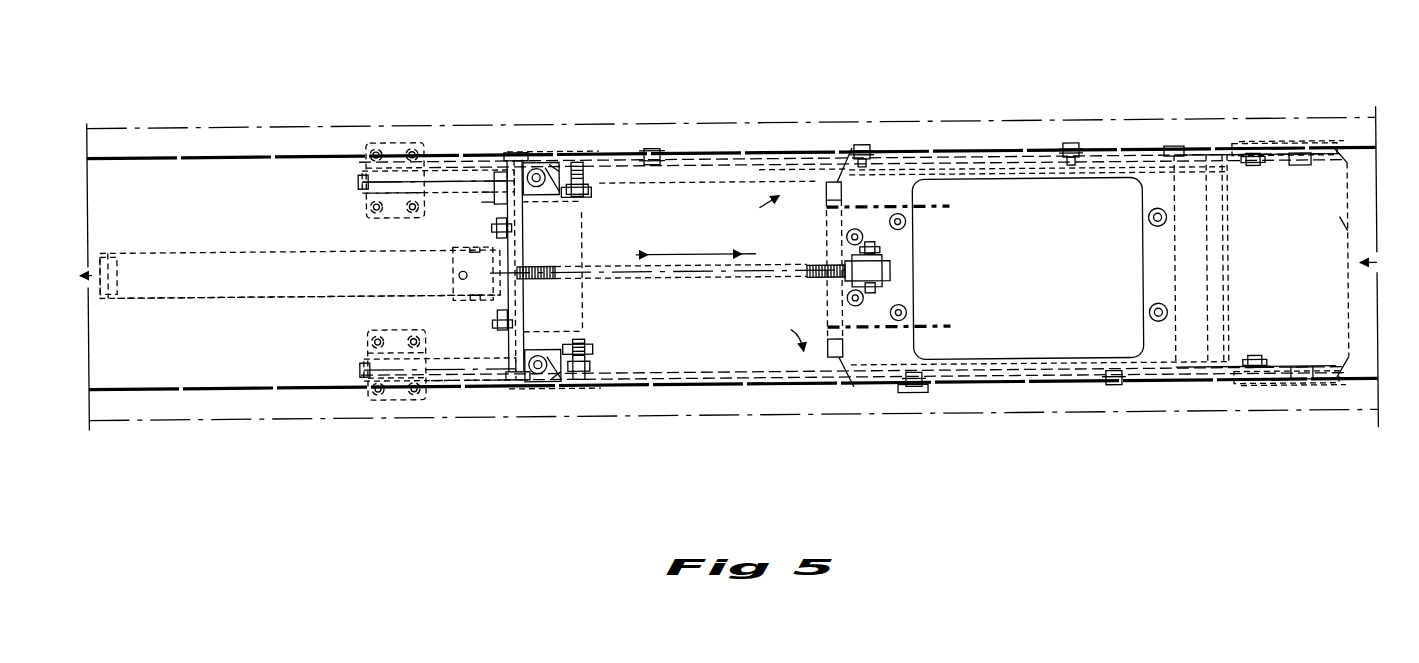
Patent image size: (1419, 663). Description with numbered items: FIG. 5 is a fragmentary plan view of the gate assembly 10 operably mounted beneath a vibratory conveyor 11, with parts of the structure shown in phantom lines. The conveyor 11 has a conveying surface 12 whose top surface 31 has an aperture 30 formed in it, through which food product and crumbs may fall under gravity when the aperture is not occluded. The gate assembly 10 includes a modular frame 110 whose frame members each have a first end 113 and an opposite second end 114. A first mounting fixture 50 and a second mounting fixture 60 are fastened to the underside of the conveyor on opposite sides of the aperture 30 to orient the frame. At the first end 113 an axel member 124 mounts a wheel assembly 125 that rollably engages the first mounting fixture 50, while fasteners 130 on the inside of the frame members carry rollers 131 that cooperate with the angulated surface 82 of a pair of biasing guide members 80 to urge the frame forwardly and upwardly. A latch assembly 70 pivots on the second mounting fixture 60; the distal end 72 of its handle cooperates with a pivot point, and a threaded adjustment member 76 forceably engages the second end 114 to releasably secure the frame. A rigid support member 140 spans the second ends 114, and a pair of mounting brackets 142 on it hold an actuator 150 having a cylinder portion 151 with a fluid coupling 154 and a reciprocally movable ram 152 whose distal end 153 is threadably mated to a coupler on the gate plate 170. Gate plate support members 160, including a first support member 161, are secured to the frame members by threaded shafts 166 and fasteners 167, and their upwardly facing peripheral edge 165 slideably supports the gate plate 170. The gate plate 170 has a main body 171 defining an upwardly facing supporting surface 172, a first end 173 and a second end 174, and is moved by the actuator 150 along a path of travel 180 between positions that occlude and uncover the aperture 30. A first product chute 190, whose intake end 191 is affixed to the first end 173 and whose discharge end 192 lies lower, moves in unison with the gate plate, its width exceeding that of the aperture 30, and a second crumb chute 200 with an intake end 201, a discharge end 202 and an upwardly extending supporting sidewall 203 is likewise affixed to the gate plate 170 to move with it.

The gate assembly 10 is at (775, 384).
The vibratory conveyor 11 is at (247, 372).
The conveying surface 12 is at (806, 178).
The apertures 30 is at (920, 340).
The top surface 31 is at (265, 153).
The first mounting fixture 50 is at (1298, 172).
The second mounting fixture 60 is at (390, 140).
The latch assembly 70 is at (444, 382).
The distal end 72 is at (447, 168).
The threaded adjustment member 76 is at (516, 158).
The biasing guide members 80 is at (553, 158).
The angulated surface 82 is at (577, 196).
The modular frame 110 is at (622, 150).
The first end 113 is at (1285, 146).
The second end 114 is at (516, 152).
The axel member 124 is at (1262, 150).
The wheel assembly 125 is at (1254, 172).
The second pair of fasteners 130 is at (556, 162).
The rollers 131 is at (593, 190).
The rigid support member 140 is at (494, 200).
The mounting brackets 142 is at (494, 226).
The actuator 150 is at (240, 246).
The cylinder portion 151 is at (232, 295).
The ram 152 is at (670, 278).
The distal end 153 is at (826, 270).
The fluid coupling 154 is at (462, 298).
The gate plate support members 160 is at (760, 208).
The first support member 161 is at (700, 182).
The upwardly facing peripheral edge 165 is at (790, 158).
The threaded shafts 166 is at (863, 146).
The fasteners 167 is at (903, 394).
The gate plate 170 is at (905, 228).
The main body 171 is at (902, 153).
The upwardly facing supporting surface 172 is at (1045, 287).
The first end 173 is at (1172, 150).
The second end 174 is at (905, 180).
The path of travel 180 is at (696, 240).
The first product chute 190 is at (1275, 272).
The intake end 191 is at (1140, 240).
The discharge end 192 is at (1342, 297).
The second crumb chute 200 is at (1030, 385).
The first intake end 201 is at (922, 158).
The second discharge end 202 is at (1340, 230).
The supporting sidewall 203 is at (1336, 152).